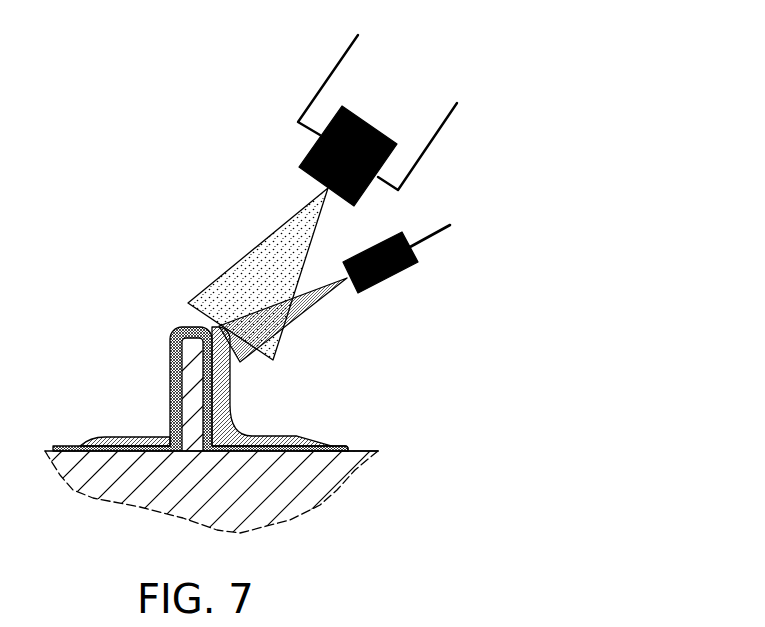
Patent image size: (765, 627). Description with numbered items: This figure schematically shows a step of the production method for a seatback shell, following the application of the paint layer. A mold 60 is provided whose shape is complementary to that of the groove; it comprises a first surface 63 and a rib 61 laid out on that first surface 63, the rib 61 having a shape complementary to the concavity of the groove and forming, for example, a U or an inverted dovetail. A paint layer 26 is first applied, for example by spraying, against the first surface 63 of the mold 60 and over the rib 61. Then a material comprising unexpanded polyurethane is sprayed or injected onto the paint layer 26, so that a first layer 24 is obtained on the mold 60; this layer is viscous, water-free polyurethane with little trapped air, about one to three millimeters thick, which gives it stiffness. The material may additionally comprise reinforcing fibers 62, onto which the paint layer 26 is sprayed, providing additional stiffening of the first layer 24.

The first layer 24 is at (230, 407).
The paint layer 26 is at (337, 447).
The mold 60 is at (275, 505).
The rib 61 is at (197, 382).
The reinforcing fiber 62 is at (318, 307).
The first surface 63 is at (367, 450).